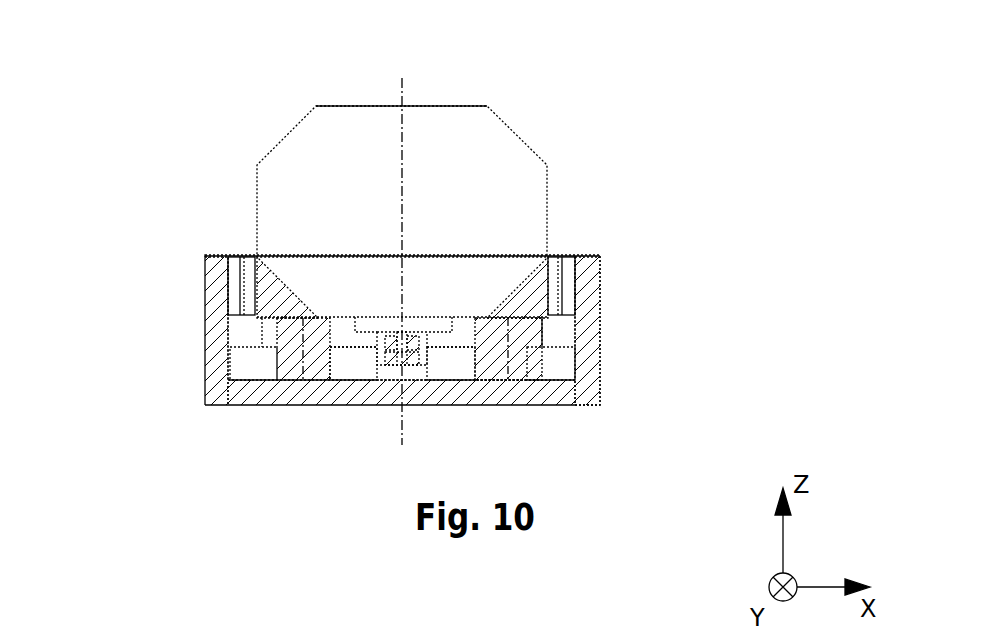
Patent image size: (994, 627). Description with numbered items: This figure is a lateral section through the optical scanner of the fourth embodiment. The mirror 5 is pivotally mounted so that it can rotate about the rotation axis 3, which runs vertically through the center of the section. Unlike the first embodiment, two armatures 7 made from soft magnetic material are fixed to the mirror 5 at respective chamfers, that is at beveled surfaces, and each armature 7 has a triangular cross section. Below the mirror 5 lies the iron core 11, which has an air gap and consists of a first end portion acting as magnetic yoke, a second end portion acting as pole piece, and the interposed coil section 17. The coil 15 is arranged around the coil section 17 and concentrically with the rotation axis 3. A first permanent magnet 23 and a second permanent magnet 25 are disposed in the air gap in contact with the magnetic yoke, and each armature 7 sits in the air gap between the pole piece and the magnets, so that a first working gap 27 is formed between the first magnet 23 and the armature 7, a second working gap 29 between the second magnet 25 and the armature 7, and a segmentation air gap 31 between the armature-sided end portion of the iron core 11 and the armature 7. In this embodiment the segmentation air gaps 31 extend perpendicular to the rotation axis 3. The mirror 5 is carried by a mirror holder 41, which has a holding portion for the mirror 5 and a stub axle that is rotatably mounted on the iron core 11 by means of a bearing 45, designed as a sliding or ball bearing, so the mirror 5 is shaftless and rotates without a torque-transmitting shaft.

The rotation axis 3 is at (402, 89).
The mirror 5 is at (500, 175).
The armature 7 is at (257, 280).
The iron core 11 is at (602, 345).
The coil 15 is at (257, 376).
The coil section 17 is at (290, 373).
The first permanent magnet 23 is at (232, 292).
The second permanent magnet 25 is at (573, 298).
The first working gap 27 is at (255, 290).
The second working gap 29 is at (549, 292).
The segmentation air gap 31 is at (292, 318).
The mirror holder 41 is at (420, 318).
The bearing 45 is at (390, 337).